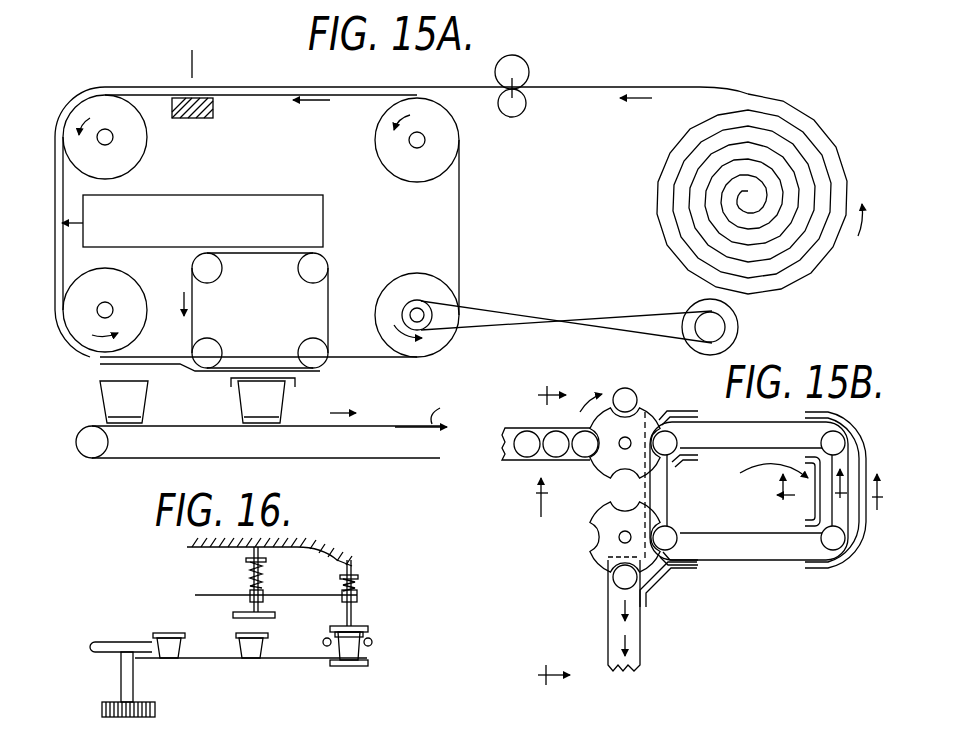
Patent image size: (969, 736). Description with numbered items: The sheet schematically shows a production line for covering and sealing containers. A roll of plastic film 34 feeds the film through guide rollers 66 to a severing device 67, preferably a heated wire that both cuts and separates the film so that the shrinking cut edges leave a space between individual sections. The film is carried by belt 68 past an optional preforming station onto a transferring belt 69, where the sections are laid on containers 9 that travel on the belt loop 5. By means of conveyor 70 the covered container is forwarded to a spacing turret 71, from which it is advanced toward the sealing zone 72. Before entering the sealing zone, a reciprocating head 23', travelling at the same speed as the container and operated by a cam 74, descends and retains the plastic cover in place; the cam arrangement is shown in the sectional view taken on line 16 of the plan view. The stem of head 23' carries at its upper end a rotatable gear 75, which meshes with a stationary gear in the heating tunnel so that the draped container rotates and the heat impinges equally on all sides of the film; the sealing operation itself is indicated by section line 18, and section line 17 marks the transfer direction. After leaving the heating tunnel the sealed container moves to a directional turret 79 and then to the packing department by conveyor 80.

In FIG. 15A, the belt loop / preforming conveyor 5 is at (55, 322).
In FIG. 15A, the severing device 67 is at (192, 60).
In FIG. 15A, the belt 68 is at (257, 93).
In FIG. 15A, the guide rollers 66 is at (525, 70).
In FIG. 15A, the roll of plastic film 34 is at (656, 193).
In FIG. 15A, the transferring belt 69 is at (333, 284).
In FIG. 15A, the container 9 is at (100, 392).
In FIG. 15B, the container 9 is at (636, 395).
In FIG. 16, the container 9 is at (251, 655).
In FIG. 15A, the conveyor 70 is at (400, 424).
In FIG. 15B, the conveyor 70 is at (510, 435).
In FIG. 15B, the section line 17- 17 is at (544, 529).
In FIG. 15B, the spacing turret 71 is at (651, 425).
In FIG. 15B, the directional turret 79 is at (605, 517).
In FIG. 15B, the section line 16- 16 is at (704, 504).
In FIG. 15B, the section line 18-18 (sealing zone) 18 is at (745, 514).
In FIG. 15B, the sealing zone 72 is at (848, 525).
In FIG. 15B, the conveyor 80 is at (612, 620).
In FIG. 16, the cam 74 is at (323, 561).
In FIG. 16, the reciprocating head 23' is at (273, 582).
In FIG. 16, the rotatable gear 75 is at (358, 577).